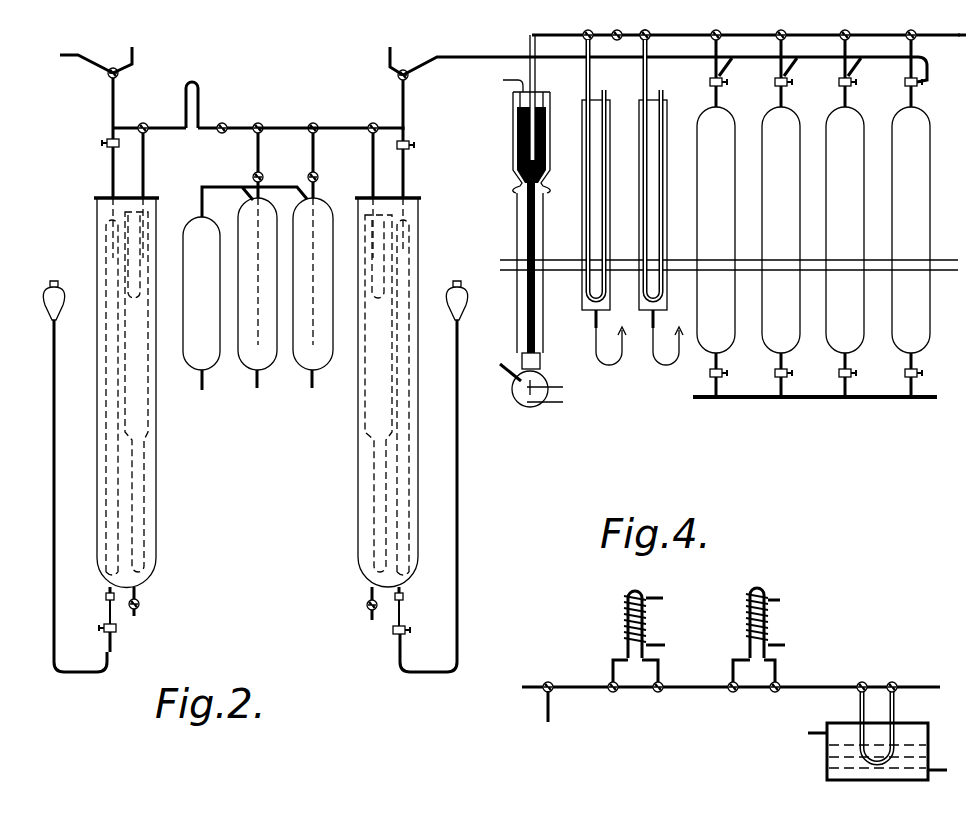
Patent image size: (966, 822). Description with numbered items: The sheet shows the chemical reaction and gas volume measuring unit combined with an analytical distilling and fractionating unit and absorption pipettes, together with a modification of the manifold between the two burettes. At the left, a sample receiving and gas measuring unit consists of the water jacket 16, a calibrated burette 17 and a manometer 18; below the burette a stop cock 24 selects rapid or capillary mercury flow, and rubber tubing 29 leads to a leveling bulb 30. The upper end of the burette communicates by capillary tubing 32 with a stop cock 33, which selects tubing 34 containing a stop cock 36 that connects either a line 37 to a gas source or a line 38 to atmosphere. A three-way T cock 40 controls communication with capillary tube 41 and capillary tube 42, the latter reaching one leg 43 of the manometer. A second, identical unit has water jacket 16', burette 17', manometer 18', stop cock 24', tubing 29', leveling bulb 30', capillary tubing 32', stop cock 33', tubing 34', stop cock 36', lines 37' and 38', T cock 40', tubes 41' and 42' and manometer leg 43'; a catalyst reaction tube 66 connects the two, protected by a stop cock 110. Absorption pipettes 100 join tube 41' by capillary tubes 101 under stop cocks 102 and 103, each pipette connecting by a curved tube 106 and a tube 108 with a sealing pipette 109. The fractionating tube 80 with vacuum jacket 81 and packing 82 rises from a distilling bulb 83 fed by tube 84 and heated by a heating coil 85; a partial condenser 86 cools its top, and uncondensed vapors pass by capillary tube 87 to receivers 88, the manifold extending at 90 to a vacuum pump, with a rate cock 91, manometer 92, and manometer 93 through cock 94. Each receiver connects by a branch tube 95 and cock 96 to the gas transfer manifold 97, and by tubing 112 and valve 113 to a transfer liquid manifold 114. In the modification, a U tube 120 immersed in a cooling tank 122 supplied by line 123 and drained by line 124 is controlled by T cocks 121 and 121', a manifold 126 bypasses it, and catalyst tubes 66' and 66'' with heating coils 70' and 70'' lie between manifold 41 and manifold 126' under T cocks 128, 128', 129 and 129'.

In FIG. 2, the water jacket 16 is at (140, 411).
In FIG. 2, the calibrated burette 17 is at (93, 397).
In FIG. 2, the manometer 18 is at (153, 392).
In FIG. 2, the stop cock 24 is at (95, 628).
In FIG. 2, the rubber tubing 29 is at (60, 496).
In FIG. 2, the leveling bulb 30 is at (41, 291).
In FIG. 2, the capillary tubing 32 is at (91, 202).
In FIG. 2, the stop cock 33 is at (92, 142).
In FIG. 2, the tubing 34 is at (91, 109).
In FIG. 2, the stop cock 36 is at (92, 83).
In FIG. 2, the line 37 is at (86, 48).
In FIG. 2, the line 38 is at (139, 59).
In FIG. 2, the 3-way T cock 40 is at (144, 110).
In FIG. 2, the capillary tube 41 is at (185, 142).
In FIG. 4, the capillary tube 41 is at (656, 676).
In FIG. 2, the capillary tube 42 is at (161, 195).
In FIG. 4, the capillary tube 42 is at (525, 709).
In FIG. 2, the leg of manometer 43 is at (155, 252).
In FIG. 2, the catalyst reaction tube 66 is at (210, 98).
In FIG. 2, the water jacket 16' is at (369, 412).
In FIG. 2, the calibrated burette 17' is at (425, 397).
In FIG. 2, the compensating manometer 18' is at (352, 393).
In FIG. 2, the stop cock 24' is at (417, 634).
In FIG. 2, the rubber tubing 29' is at (452, 496).
In FIG. 2, the leveling bulb 30' is at (471, 295).
In FIG. 2, the capillary tubing 32' is at (427, 199).
In FIG. 2, the stop cock 33' is at (425, 144).
In FIG. 2, the tubing 34' is at (427, 110).
In FIG. 2, the stop cock 36' is at (422, 84).
In FIG. 2, the line 37' is at (425, 53).
In FIG. 2, the line 38' is at (377, 61).
In FIG. 2, the 3-way T cock 40' is at (379, 110).
In FIG. 2, the capillary tube 41' is at (330, 110).
In FIG. 4, the capillary tube 41' is at (916, 703).
In FIG. 2, the capillary tube 42' is at (355, 195).
In FIG. 2, the leg of manometer 43' is at (413, 259).
In FIG. 2, the fractionating tube 80 is at (536, 322).
In FIG. 2, the vacuum jacket 81 is at (516, 211).
In FIG. 2, the packing 82 is at (536, 296).
In FIG. 2, the distilling bulb 83 is at (513, 399).
In FIG. 2, the tube 84 is at (499, 365).
In FIG. 2, the electrical heating coil 85 is at (553, 390).
In FIG. 2, the partial condenser 86 is at (513, 122).
In FIG. 2, the capillary tube 87 is at (537, 73).
In FIG. 2, the receivers 88 is at (776, 117).
In FIG. 2, the manifold extension 90 is at (940, 38).
In FIG. 2, the rate cock 91 is at (618, 28).
In FIG. 2, the manometer 92 is at (582, 238).
In FIG. 2, the manometer 93 is at (664, 227).
In FIG. 2, the cock 94 is at (648, 38).
In FIG. 2, the branch tube 95 is at (734, 72).
In FIG. 2, the cock 96 is at (712, 84).
In FIG. 2, the gas transfer manifold 97 is at (483, 55).
In FIG. 2, the absorption pipette 100 is at (313, 384).
In FIG. 2, the capillary tube 101 is at (311, 149).
In FIG. 2, the stop cock 102 is at (311, 123).
In FIG. 2, the stop cock 103 is at (318, 178).
In FIG. 2, the curved tube 106 is at (256, 380).
In FIG. 2, the tube 108 is at (264, 178).
In FIG. 2, the sealing pipette 109 is at (190, 363).
In FIG. 2, the stop cock 110 is at (222, 134).
In FIG. 2, the tubing 112 is at (843, 364).
In FIG. 2, the valve 113 is at (776, 374).
In FIG. 2, the manifold 114 is at (872, 395).
In FIG. 4, the catalyst tube 66' is at (649, 613).
In FIG. 4, the catalyst tube 66'' is at (773, 612).
In FIG. 4, the electrical heating coil 70' is at (649, 650).
In FIG. 4, the electrical heating coil 70'' is at (775, 649).
In FIG. 4, the U tube 120 is at (858, 733).
In FIG. 4, the 3-way T cock 121 is at (829, 674).
In FIG. 4, the 3-way T cock 121' is at (898, 674).
In FIG. 4, the cooling tank 122 is at (893, 779).
In FIG. 4, the line 123 is at (937, 774).
In FIG. 4, the line 124 is at (820, 737).
In FIG. 4, the manifold 126 is at (870, 659).
In FIG. 4, the manifold 126' is at (824, 702).
In FIG. 4, the 3-way T cock 128 is at (600, 703).
In FIG. 4, the 3-way T cock 128' is at (658, 703).
In FIG. 4, the 3-way T cock 129 is at (717, 702).
In FIG. 4, the 3-way T cock 129' is at (758, 705).